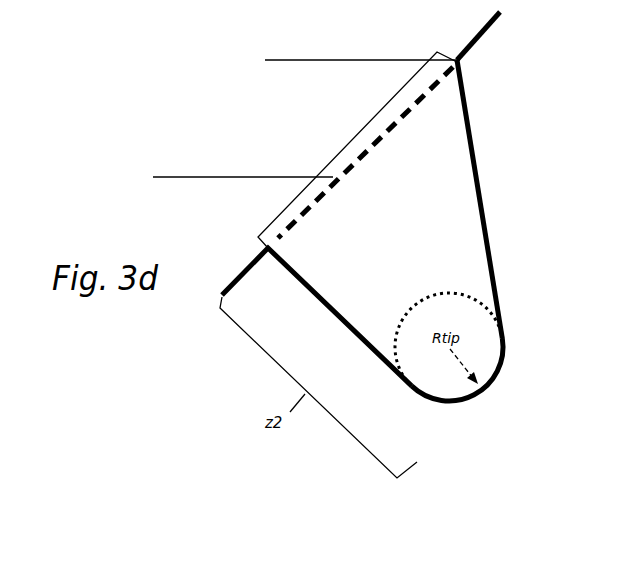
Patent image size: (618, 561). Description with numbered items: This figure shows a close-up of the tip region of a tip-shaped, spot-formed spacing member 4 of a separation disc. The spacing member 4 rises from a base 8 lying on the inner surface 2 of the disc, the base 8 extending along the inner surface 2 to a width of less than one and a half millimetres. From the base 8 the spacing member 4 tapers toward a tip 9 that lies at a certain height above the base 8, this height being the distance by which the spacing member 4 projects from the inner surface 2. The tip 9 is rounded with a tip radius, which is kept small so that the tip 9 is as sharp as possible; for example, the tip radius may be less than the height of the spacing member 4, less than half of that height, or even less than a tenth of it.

The inner surface 2 is at (480, 40).
The tip-shaped spacing member 4 is at (450, 143).
The base 8 is at (353, 142).
The tip 9 is at (507, 327).